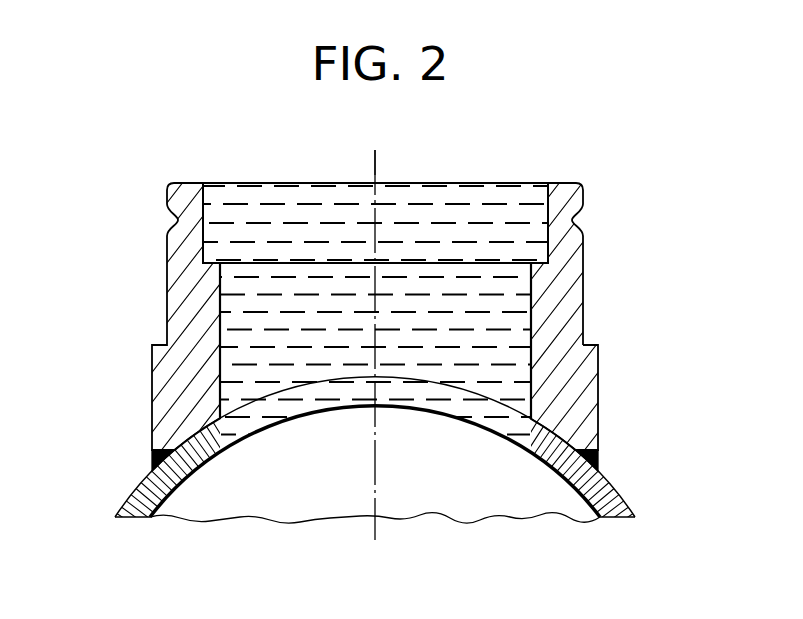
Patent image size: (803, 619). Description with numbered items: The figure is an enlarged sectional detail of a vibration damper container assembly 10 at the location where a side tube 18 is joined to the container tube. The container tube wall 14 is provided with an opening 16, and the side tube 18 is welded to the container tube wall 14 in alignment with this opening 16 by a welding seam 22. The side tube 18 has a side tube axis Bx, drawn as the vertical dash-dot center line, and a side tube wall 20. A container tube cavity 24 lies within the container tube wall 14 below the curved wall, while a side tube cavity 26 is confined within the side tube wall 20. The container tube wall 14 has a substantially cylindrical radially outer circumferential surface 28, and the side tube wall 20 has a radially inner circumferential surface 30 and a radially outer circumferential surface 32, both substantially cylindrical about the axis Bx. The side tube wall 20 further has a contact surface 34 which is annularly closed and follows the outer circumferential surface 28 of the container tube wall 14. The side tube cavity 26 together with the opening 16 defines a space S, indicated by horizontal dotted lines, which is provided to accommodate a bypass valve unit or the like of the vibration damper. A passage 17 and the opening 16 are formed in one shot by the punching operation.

The hydraulic accumulator / damper device 10 is at (119, 530).
The container tube wall 14 is at (620, 506).
The opening 16 is at (445, 408).
The passage 17 is at (222, 372).
The side tube 18 is at (604, 332).
The side tube wall 20 is at (565, 252).
The welding seam 22 is at (155, 456).
The container tube cavity 24 is at (402, 487).
The side tube cavity 26 is at (321, 318).
The radially outer circumferential surface 28 is at (131, 493).
The radially inner circumferential surface 30 is at (531, 269).
The radially outer circumferential surface 32 is at (585, 305).
The contact surface 34 is at (555, 435).
The space S is at (433, 276).
The side tube axis Bx is at (378, 172).